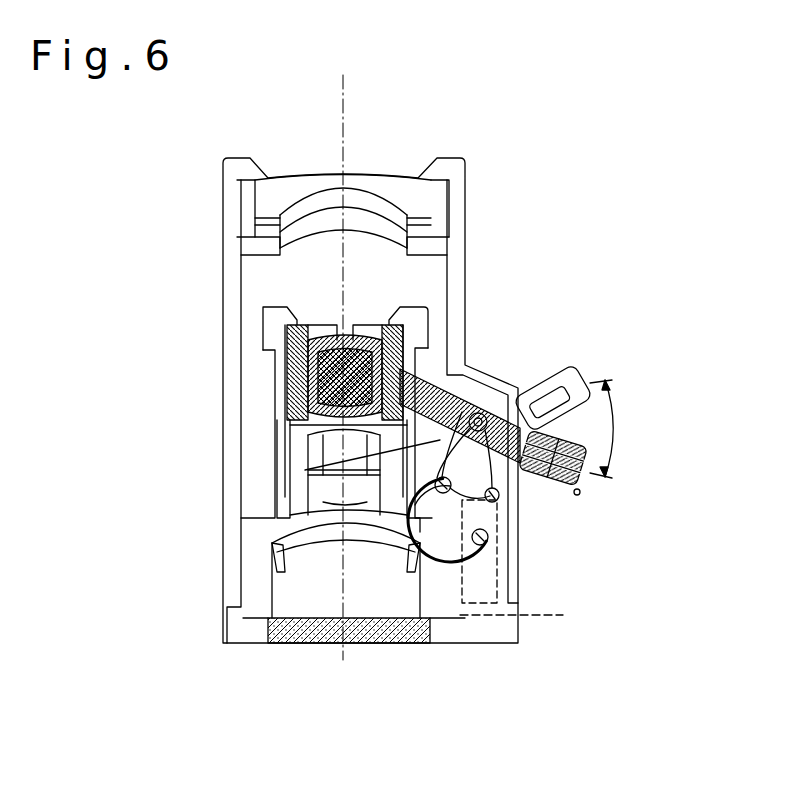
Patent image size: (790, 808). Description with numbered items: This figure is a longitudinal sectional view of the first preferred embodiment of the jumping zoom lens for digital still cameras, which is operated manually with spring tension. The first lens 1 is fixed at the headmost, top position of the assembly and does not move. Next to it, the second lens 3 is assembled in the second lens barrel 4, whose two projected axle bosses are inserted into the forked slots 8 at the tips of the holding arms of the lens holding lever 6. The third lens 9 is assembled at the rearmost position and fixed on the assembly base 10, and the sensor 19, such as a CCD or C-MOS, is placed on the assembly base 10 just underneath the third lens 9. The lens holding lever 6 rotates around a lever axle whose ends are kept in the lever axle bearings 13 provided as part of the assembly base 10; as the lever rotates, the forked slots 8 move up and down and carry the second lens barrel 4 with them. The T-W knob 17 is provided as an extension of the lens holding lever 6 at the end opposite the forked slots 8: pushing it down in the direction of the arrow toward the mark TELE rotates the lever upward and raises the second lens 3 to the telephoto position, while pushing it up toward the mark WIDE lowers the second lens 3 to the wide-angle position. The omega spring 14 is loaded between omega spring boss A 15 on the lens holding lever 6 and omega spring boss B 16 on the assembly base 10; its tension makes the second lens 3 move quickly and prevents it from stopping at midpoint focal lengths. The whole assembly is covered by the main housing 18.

The first lens 1 is at (384, 178).
The second lens 3 is at (368, 336).
The second lens barrel 4 is at (403, 325).
The lens holding lever 6 is at (479, 400).
The forked slots 8 is at (445, 430).
The third lens 9 is at (323, 541).
The assembly base 10 is at (250, 630).
The lever axle bearings 13 is at (487, 410).
The omega spring 14 is at (437, 563).
The omega spring boss A 15 is at (499, 498).
The omega spring boss B 16 is at (492, 543).
The T-W knob 17 is at (579, 495).
The main housing 18 is at (222, 268).
The sensor 19 is at (317, 645).